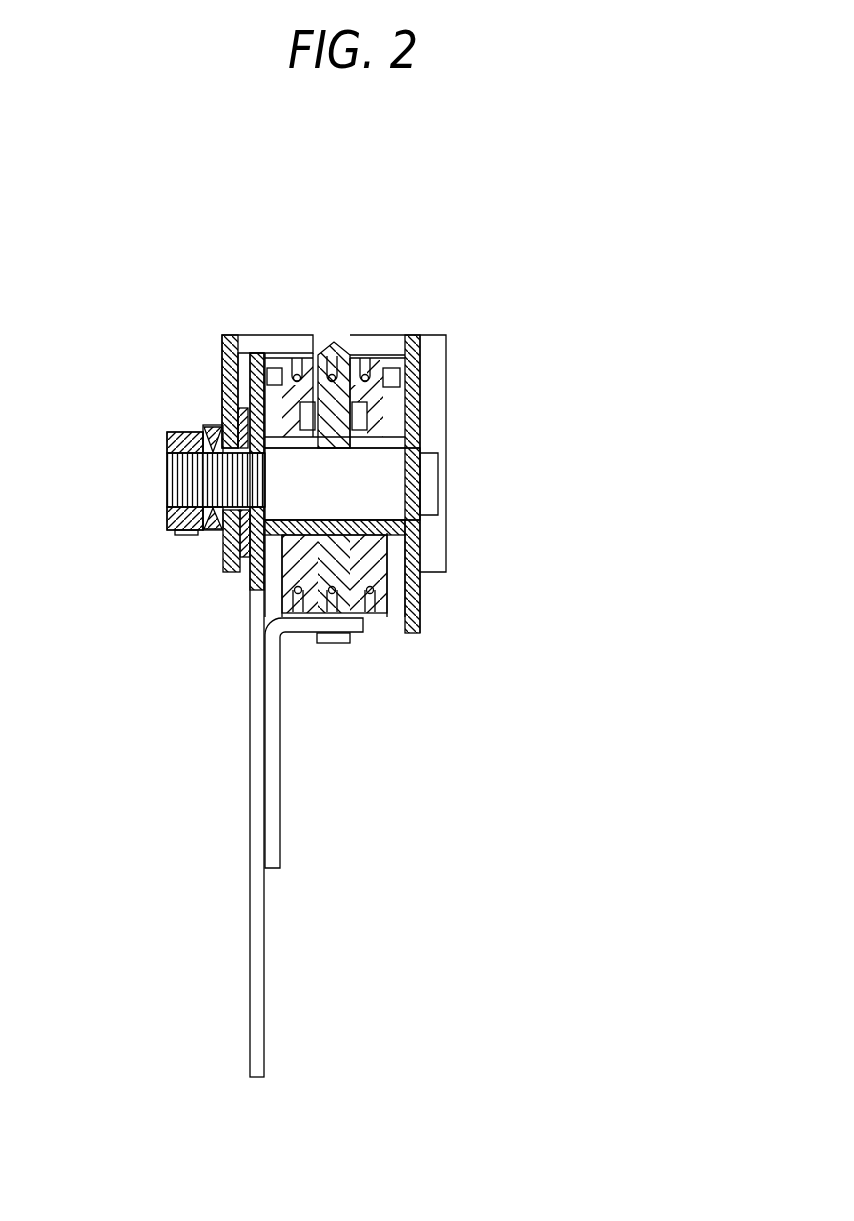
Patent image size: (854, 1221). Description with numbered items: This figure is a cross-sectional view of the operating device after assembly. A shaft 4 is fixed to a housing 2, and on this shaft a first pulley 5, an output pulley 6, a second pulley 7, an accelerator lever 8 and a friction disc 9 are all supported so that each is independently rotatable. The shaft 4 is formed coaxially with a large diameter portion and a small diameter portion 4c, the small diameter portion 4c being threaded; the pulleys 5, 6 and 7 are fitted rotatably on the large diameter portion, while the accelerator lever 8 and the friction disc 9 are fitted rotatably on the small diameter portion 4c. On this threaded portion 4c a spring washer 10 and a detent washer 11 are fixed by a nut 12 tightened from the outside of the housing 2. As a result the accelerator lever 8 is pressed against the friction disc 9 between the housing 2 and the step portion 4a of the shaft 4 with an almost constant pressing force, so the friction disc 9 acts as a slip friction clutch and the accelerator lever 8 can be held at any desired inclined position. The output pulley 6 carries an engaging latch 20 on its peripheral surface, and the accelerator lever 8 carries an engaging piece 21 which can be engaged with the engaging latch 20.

The housing 2 is at (232, 333).
The shaft 4 is at (397, 504).
The step portion 4a is at (402, 473).
The small diameter portion 4c is at (263, 481).
The first pulley 5 is at (376, 365).
The output pulley 6 is at (341, 345).
The second pulley 7 is at (312, 360).
The accelerator lever 8 is at (255, 933).
The friction disc 9 is at (247, 565).
The spring washer 10 is at (213, 530).
The detent washer 11 is at (187, 535).
The nut 12 is at (167, 436).
The engaging latch 20 is at (335, 645).
The engaging piece 21 is at (272, 820).